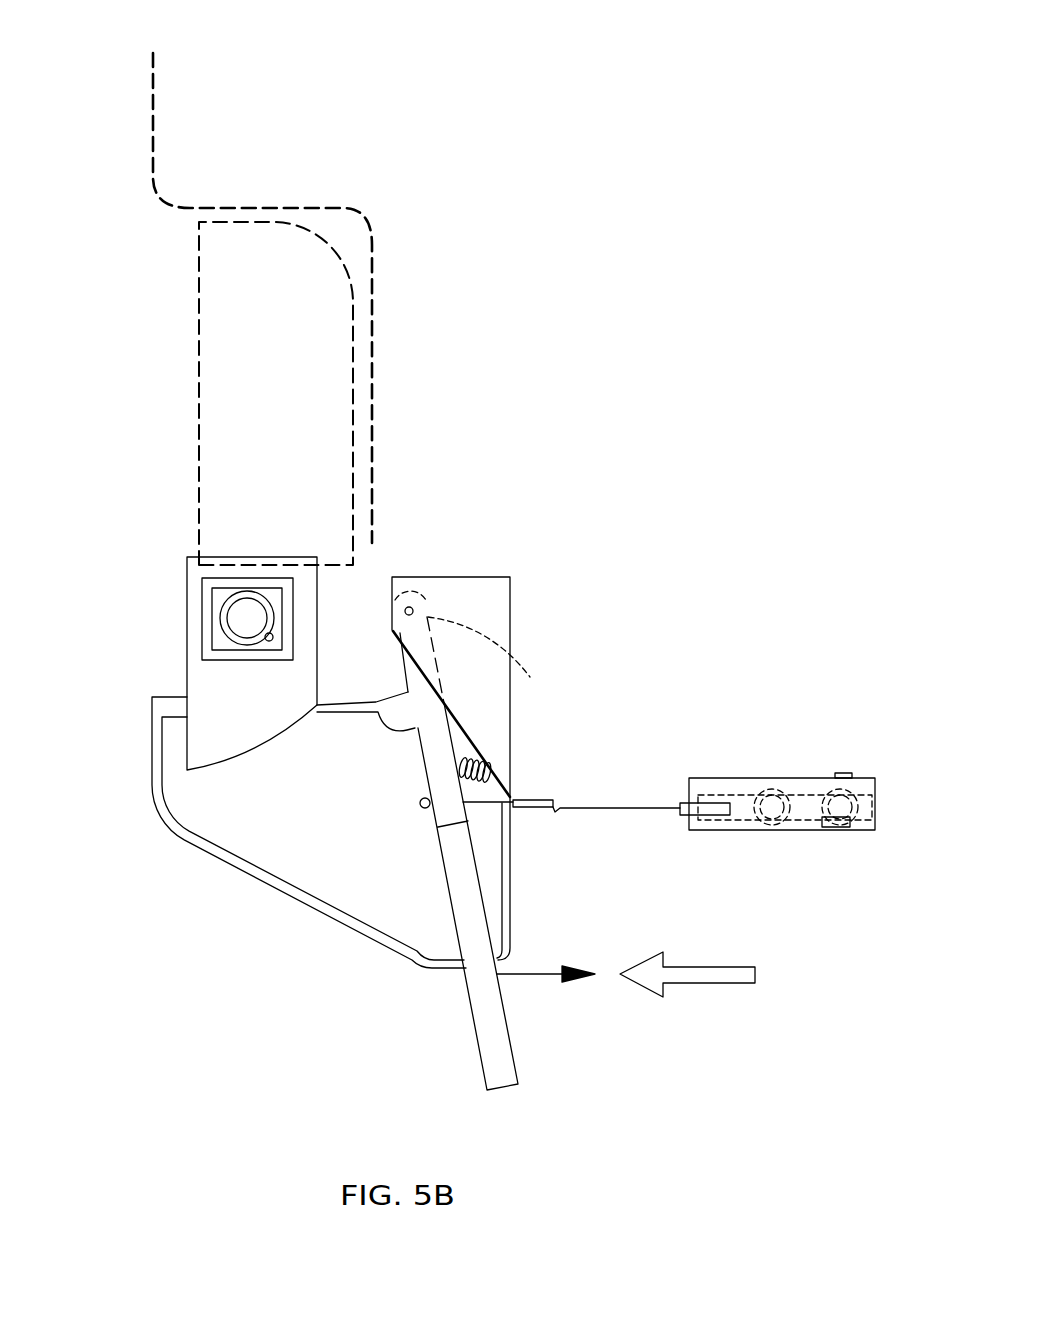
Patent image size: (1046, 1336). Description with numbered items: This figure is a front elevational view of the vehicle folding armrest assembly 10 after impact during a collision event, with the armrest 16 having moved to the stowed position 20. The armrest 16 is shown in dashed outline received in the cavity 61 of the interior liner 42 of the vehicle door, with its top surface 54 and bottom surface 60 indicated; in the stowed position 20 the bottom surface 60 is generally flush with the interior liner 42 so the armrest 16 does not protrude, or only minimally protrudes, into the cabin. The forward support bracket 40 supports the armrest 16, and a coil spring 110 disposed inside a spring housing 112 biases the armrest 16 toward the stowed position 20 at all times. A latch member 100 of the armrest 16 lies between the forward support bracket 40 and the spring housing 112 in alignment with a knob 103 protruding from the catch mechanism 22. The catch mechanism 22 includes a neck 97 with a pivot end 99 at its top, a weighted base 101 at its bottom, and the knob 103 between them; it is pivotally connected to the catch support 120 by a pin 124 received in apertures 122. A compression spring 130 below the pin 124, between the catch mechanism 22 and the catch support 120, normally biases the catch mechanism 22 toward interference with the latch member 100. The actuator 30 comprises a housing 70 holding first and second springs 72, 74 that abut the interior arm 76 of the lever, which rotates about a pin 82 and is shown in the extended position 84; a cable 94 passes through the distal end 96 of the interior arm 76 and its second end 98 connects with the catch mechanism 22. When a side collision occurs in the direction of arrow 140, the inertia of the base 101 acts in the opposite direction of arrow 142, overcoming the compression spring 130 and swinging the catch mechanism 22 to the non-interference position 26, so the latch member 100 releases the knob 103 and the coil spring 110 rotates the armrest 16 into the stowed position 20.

The vehicle folding armrest assembly 10 is at (642, 98).
The armrest 16 is at (350, 277).
The stowed position 20 is at (560, 298).
The catch mechanism 22 is at (473, 1027).
The non-interference position 26 is at (445, 1002).
The actuator 30 is at (758, 742).
The forward support bracket 40 is at (152, 735).
The interior liner 42 is at (150, 91).
The top surface 54 is at (357, 354).
The bottom surface 60 is at (196, 380).
The cavity 61 is at (330, 237).
The housing 70 is at (735, 777).
The first spring 72 is at (757, 823).
The second spring 74 is at (818, 823).
The interior arm 76 is at (792, 795).
The pin 82 is at (840, 772).
The extended position 84 is at (670, 785).
The cable 94 is at (560, 810).
The distal end of the interior arm 96 is at (689, 800).
The neck 97 is at (432, 728).
The second end of the cable 98 is at (421, 804).
The pivot end 99 is at (492, 661).
The latch member 100 is at (257, 718).
The base 101 is at (490, 1015).
The knob 103 is at (393, 690).
The coil spring 110 is at (222, 605).
The spring housing 112 is at (202, 628).
The catch support 120 is at (487, 577).
The apertures 122 is at (413, 608).
The pin 124 is at (405, 607).
The compression spring 130 is at (474, 782).
The arrow 140 is at (700, 965).
The arrow 142 is at (528, 972).